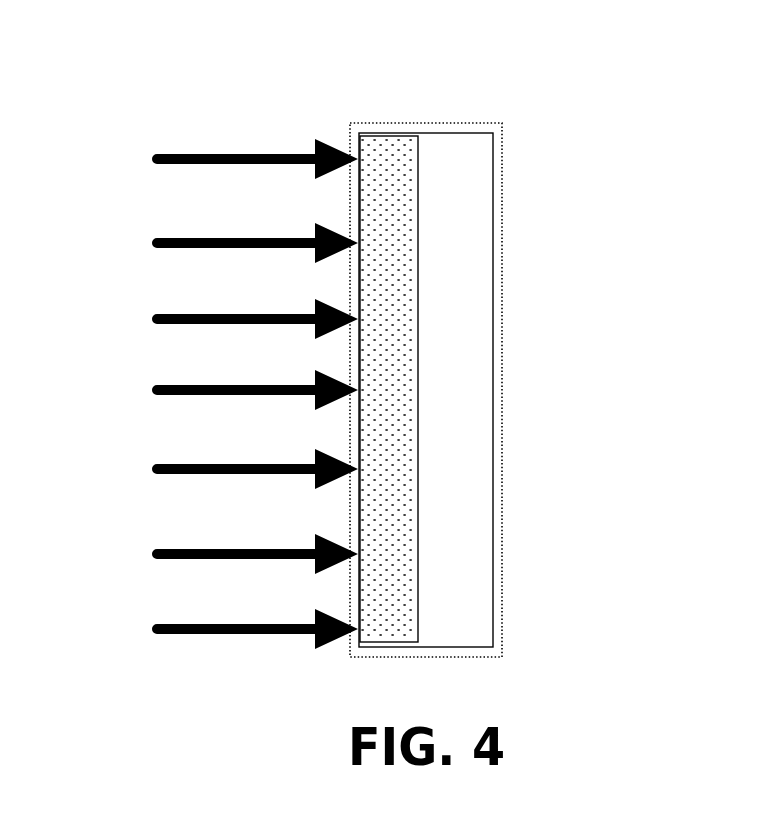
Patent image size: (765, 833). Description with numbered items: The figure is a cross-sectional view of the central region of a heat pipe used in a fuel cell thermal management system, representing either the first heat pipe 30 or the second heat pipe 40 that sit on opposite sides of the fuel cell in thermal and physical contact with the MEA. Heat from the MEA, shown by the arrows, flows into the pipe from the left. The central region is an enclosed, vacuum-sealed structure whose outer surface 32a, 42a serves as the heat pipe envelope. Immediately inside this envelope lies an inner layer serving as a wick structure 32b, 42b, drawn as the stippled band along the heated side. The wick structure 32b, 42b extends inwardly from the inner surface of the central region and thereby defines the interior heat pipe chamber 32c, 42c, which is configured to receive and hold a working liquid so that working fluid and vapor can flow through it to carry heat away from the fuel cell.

The first heat pipe 30 is at (359, 332).
The second heat pipe 40 is at (359, 332).
The outer surface 32a is at (526, 365).
The outer surface 42a is at (526, 365).
The wick structure 32b is at (487, 358).
The wick structure 42b is at (418, 178).
The interior heat pipe chamber 32c is at (501, 390).
The interior heat pipe chamber 42c is at (463, 600).